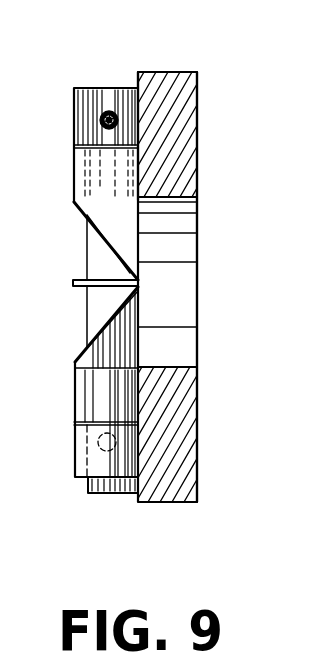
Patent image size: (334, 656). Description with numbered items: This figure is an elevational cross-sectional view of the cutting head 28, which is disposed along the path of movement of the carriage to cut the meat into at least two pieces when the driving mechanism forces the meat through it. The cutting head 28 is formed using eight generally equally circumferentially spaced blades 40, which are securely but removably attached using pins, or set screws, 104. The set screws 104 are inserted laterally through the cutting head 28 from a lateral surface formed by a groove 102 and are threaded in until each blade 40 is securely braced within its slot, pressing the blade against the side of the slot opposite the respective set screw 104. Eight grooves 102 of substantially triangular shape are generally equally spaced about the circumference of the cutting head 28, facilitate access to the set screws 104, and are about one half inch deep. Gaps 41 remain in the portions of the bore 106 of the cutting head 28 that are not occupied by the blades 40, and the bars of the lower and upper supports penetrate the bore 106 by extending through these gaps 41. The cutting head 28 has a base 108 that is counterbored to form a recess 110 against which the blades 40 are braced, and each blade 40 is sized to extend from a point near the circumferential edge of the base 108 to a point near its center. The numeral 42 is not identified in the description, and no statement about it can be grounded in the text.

The cutting head 28 is at (192, 93).
The blades 40 is at (82, 213).
The gaps 41 is at (95, 262).
The bar 42 is at (60, 296).
The grooves 102 is at (142, 500).
The set screws 104 is at (107, 111).
The bore 106 is at (183, 240).
The base 108 is at (197, 127).
The recess 110 is at (138, 78).